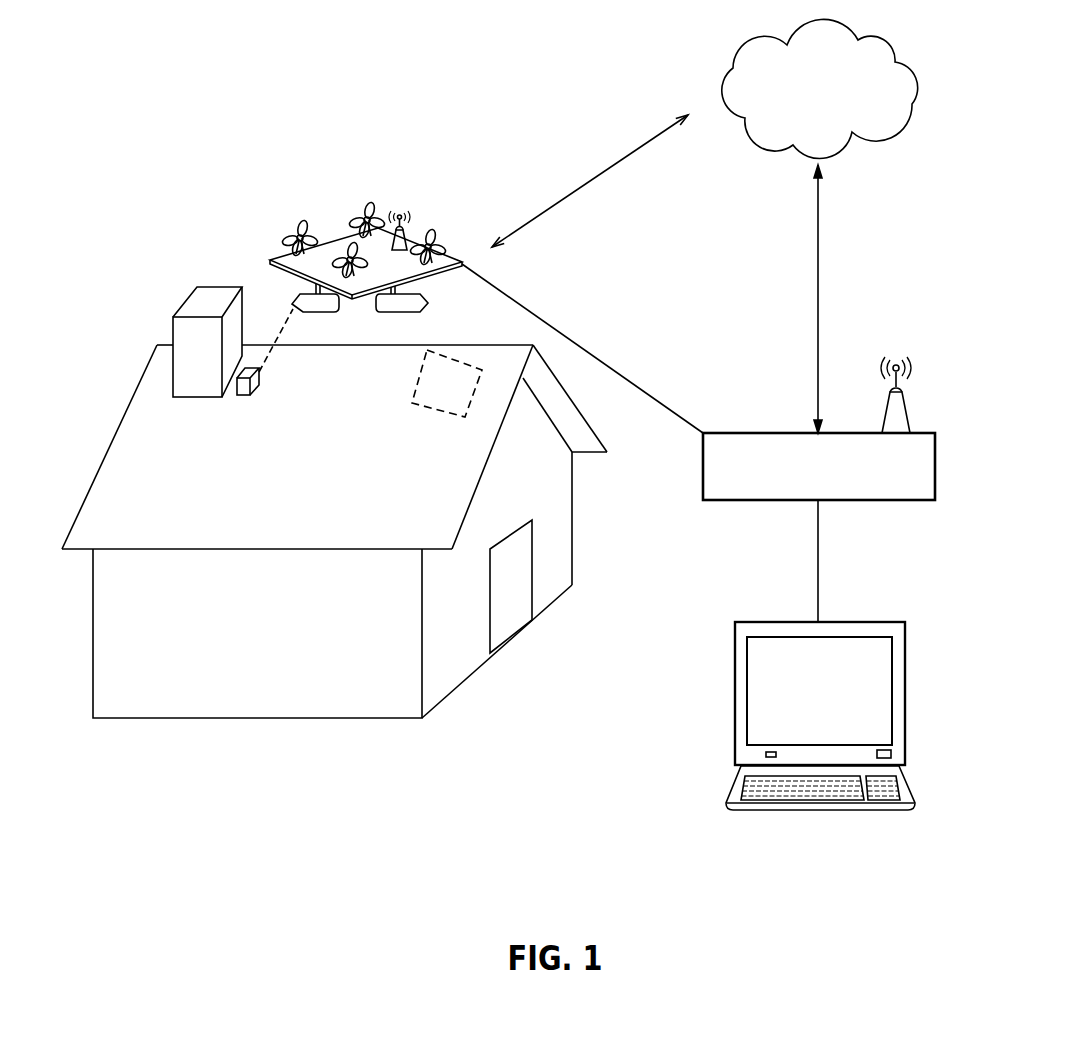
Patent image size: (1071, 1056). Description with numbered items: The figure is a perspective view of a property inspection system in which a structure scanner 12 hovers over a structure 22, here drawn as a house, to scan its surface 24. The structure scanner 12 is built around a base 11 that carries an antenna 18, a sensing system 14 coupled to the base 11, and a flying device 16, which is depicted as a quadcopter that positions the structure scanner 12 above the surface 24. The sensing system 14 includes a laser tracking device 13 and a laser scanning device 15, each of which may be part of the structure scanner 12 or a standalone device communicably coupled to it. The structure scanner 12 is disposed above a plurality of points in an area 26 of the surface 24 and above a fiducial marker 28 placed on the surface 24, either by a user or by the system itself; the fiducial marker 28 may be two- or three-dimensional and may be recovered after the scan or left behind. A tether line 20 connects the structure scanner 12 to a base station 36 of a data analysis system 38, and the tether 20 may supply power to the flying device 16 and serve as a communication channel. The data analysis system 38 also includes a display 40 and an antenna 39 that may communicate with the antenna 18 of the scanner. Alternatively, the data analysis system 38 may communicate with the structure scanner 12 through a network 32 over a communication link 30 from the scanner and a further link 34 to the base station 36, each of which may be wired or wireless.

The base 11 is at (366, 267).
The structure scanner 12 is at (351, 254).
The laser tracking device 13 is at (314, 332).
The sensing system 14 is at (356, 335).
The laser scanning device 15 is at (400, 334).
The flying device 16 is at (362, 192).
The antenna 18 is at (419, 210).
The tether line 20 is at (636, 360).
The structure 22 is at (334, 502).
The surface 24 is at (294, 459).
The area 26 is at (422, 428).
The fiducial marker 28 is at (265, 356).
The communication link 30 is at (618, 158).
The network 32 is at (883, 32).
The network link to base station 34 is at (820, 287).
The base station 36 is at (937, 462).
The data analysis system 38 is at (721, 528).
The antenna 39 is at (908, 402).
The display 40 is at (862, 622).